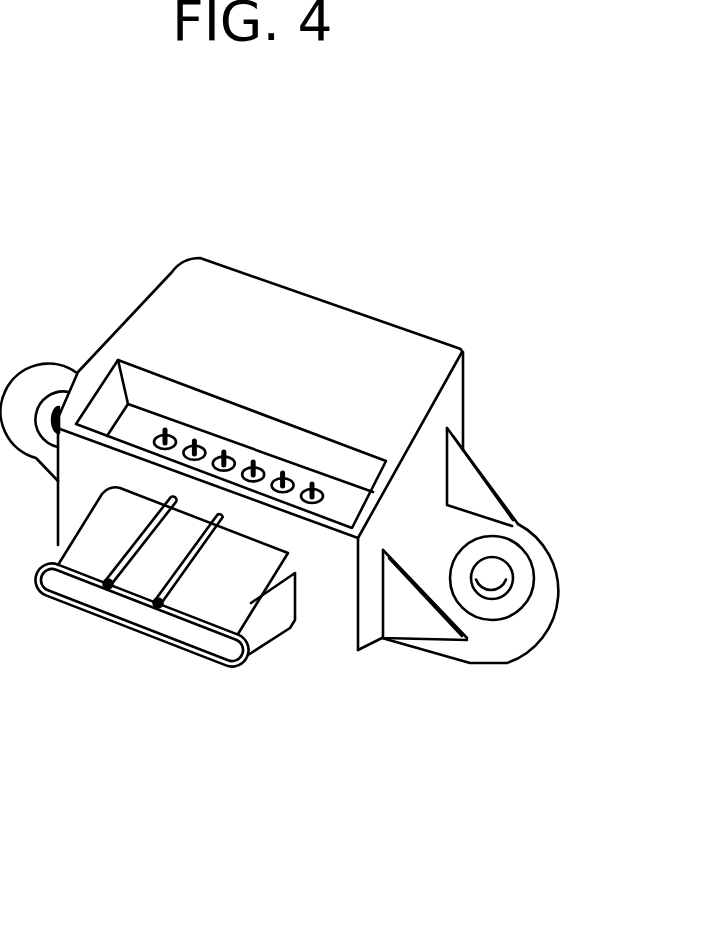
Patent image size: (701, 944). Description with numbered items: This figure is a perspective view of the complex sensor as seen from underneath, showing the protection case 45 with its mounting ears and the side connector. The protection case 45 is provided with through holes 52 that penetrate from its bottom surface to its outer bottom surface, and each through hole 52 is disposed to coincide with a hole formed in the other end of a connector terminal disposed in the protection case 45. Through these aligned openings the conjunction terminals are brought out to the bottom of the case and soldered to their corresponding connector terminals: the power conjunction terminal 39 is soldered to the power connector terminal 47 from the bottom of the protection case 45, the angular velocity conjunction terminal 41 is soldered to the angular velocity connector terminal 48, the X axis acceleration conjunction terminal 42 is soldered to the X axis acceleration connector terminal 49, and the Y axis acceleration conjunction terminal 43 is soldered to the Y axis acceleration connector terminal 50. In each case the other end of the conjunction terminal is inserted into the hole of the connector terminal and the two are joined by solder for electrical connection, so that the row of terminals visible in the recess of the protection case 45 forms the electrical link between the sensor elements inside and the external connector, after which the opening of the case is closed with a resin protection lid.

The power conjunction terminal 39 is at (226, 458).
The angular velocity conjunction terminal 41 is at (242, 468).
The X axis acceleration conjunction terminal 42 is at (165, 432).
The Y axis acceleration conjunction terminal 43 is at (195, 444).
The protection case 45 is at (382, 340).
The power connector terminal 47 is at (229, 470).
The angular velocity connector terminal 48 is at (240, 470).
The X axis acceleration connector terminal 49 is at (164, 447).
The Y axis acceleration connector terminal 50 is at (192, 456).
The through hole 52 is at (231, 462).